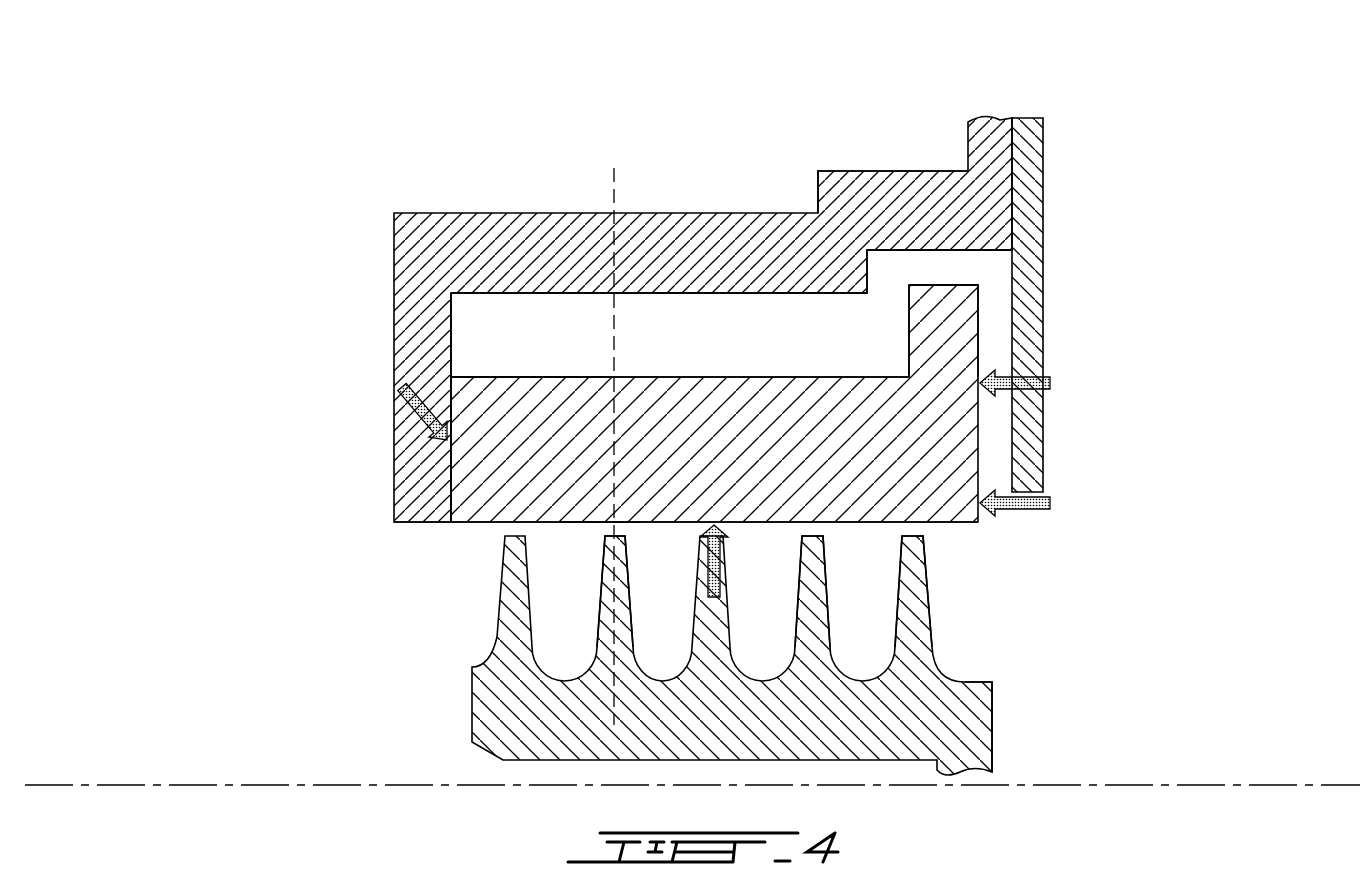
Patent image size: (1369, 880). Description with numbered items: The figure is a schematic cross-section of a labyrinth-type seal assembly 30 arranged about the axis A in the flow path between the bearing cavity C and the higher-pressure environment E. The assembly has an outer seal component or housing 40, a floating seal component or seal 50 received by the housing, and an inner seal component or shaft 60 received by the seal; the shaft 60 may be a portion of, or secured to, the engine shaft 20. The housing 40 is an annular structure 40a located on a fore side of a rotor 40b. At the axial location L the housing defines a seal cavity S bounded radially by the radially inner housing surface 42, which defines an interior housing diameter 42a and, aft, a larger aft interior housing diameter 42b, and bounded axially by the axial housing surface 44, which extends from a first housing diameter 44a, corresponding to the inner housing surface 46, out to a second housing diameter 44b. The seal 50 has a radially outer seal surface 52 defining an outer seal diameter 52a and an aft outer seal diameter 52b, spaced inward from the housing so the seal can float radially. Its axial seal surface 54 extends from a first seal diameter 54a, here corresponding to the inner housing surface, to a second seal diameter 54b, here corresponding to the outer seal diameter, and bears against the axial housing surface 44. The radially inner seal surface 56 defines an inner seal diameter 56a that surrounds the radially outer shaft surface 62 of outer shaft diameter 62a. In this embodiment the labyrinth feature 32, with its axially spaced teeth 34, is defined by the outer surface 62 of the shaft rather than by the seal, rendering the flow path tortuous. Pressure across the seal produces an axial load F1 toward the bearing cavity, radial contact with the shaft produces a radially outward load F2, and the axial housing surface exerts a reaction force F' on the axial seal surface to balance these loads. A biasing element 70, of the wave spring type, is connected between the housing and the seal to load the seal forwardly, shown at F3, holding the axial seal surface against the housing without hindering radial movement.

The seal assembly 30 is at (228, 172).
The outer seal component (housing) 40 is at (255, 278).
The annular structure 40a is at (953, 200).
The rotor 40b is at (1023, 165).
The radially inner housing surface 42 is at (717, 296).
The interior housing diameter 42a is at (616, 294).
The aft interior housing diameter 42b is at (990, 233).
The axial housing surface 44 is at (507, 407).
The first housing diameter 44a is at (453, 521).
The second housing diameter 44b is at (453, 295).
The inner housing surface 46 is at (413, 522).
The floating seal component (seal) 50 is at (255, 478).
The radially outer seal surface 52 is at (770, 377).
The outer seal diameter 52a is at (614, 377).
The aft outer seal diameter 52b is at (925, 285).
The axial seal surface 54 is at (355, 500).
The first seal diameter 54a is at (450, 522).
The second seal diameter 54b is at (449, 376).
The radially inner seal surface 56 is at (948, 522).
The inner seal diameter 56a is at (597, 527).
The biasing element 70 is at (995, 435).
The shaft 20 is at (392, 707).
The inner seal component (shaft) 60 is at (801, 650).
The radially outer shaft surface 62 is at (978, 680).
The outer shaft diameter 62a is at (627, 538).
The labyrinth feature 32 is at (970, 591).
The tooth 34 is at (812, 568).
The axial load F1 is at (1032, 503).
The radial load F2 is at (729, 561).
The biasing load F3 is at (1032, 383).
The reaction force F' is at (398, 411).
The axial location L is at (614, 195).
The seal cavity S is at (668, 322).
The bearing cavity C is at (172, 555).
The environment E is at (1188, 511).
The axis A is at (1310, 785).